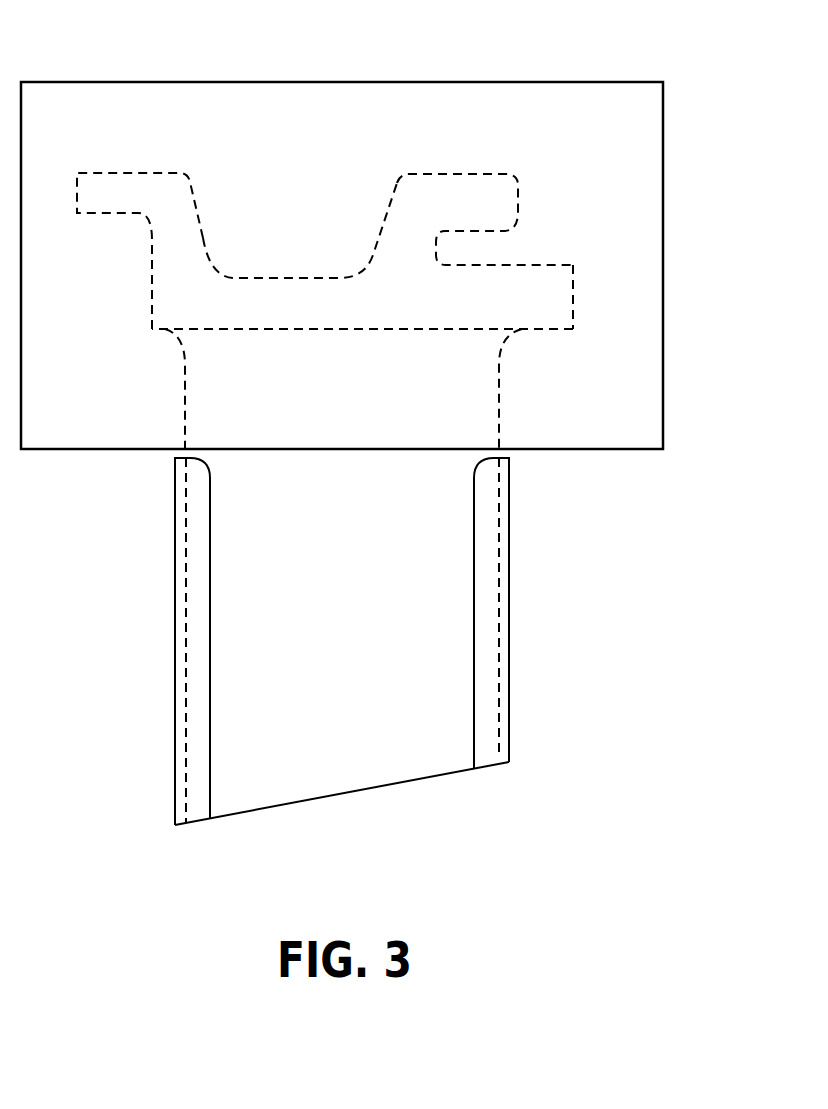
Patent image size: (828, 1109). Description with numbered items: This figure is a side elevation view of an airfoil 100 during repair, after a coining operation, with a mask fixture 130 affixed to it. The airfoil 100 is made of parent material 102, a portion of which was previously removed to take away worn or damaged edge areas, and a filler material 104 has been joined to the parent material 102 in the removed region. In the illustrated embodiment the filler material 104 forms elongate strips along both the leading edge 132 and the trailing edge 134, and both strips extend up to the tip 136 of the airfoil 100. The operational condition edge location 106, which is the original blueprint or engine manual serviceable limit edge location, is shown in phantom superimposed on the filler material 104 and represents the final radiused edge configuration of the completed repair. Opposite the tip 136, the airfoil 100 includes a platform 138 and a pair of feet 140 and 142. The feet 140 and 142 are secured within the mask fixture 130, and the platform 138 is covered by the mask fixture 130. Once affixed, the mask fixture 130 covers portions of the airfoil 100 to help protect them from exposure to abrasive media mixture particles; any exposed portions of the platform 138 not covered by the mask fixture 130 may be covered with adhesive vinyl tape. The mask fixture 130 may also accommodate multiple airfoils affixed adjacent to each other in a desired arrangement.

The airfoil 100 is at (408, 767).
The parent material 102 is at (364, 578).
The filler material 104 is at (175, 628).
The operational condition edge location 106 is at (187, 737).
The mask fixture 130 is at (541, 80).
The leading edge 132 is at (185, 397).
The trailing edge 134 is at (499, 395).
The tip 136 is at (287, 804).
The platform 138 is at (564, 300).
The foot 140 is at (133, 178).
The foot 142 is at (459, 182).